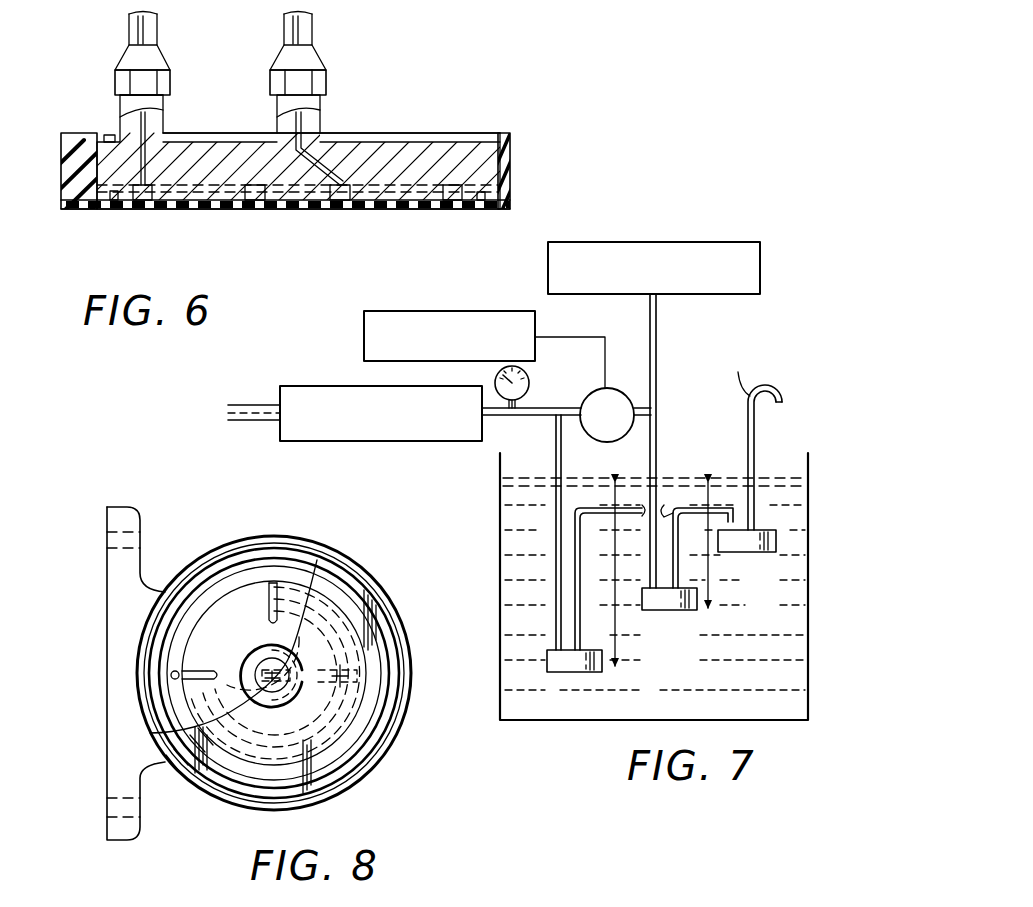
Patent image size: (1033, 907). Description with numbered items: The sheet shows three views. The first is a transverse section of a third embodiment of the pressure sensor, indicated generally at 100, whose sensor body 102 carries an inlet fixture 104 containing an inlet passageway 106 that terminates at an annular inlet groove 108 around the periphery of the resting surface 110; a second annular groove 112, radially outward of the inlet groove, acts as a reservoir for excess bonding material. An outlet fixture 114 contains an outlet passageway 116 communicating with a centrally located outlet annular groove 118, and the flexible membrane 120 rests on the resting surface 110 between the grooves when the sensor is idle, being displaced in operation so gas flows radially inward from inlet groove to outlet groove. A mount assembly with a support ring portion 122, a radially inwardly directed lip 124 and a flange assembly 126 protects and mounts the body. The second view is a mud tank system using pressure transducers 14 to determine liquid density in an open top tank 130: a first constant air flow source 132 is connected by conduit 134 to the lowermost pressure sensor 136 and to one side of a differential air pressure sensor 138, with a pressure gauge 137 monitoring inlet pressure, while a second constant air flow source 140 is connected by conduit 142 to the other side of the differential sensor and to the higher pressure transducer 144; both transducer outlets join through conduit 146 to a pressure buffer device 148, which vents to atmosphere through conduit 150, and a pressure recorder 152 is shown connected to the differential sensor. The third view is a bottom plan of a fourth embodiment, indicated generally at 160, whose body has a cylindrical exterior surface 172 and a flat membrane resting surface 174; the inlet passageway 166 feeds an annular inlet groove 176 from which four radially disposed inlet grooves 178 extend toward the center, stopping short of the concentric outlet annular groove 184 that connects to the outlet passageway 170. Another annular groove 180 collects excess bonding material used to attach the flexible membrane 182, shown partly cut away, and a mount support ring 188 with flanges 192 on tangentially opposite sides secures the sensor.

In FIG. 6, the probe assembly 100 is at (96, 85).
In FIG. 6, the sensor body 102 is at (420, 153).
In FIG. 6, the inlet fixture 104 is at (163, 103).
In FIG. 6, the inlet passageway 106 is at (145, 165).
In FIG. 6, the annular inlet groove 108 is at (141, 205).
In FIG. 6, the resting surface 110 is at (215, 208).
In FIG. 6, the second annular groove 112 is at (115, 208).
In FIG. 6, the outlet fixture 114 is at (322, 112).
In FIG. 6, the outlet passageway 116 is at (318, 165).
In FIG. 6, the outlet annular groove 118 is at (332, 207).
In FIG. 6, the flexible membrane 120 is at (428, 208).
In FIG. 6, the support ring portion 122 is at (507, 175).
In FIG. 6, the radially inwardly directed lip 124 is at (480, 133).
In FIG. 6, the flange assembly 126 is at (61, 156).
In FIG. 7, the open top tank 130 is at (500, 628).
In FIG. 7, the first constant air flow source 132 is at (280, 390).
In FIG. 7, the conduit 134 is at (557, 518).
In FIG. 7, the lowermost pressure sensor 136 is at (563, 665).
In FIG. 7, the pressure gauge 137 is at (497, 378).
In FIG. 7, the differential air pressure sensor 138 is at (590, 400).
In FIG. 7, the second constant air flow source 140 is at (730, 242).
In FIG. 7, the conduit 142 is at (660, 385).
In FIG. 7, the next higher elevation pressure transducer 144 is at (657, 603).
In FIG. 7, the conduit 146 is at (573, 558).
In FIG. 7, the pressure buffer device 148 is at (752, 541).
In FIG. 7, the conduit 150 is at (757, 462).
In FIG. 7, the pressure recorder 152 is at (364, 331).
In FIG. 7, the pressure transducers 14 is at (543, 660).
In FIG. 8, the housing 160 is at (356, 548).
In FIG. 8, the inlet passageway 166 is at (172, 674).
In FIG. 8, the outlet passageway 170 is at (298, 700).
In FIG. 8, the cylindrical exterior surface 172 is at (283, 540).
In FIG. 8, the membrane resting surface 174 is at (237, 612).
In FIG. 8, the annular inlet groove 176 is at (183, 626).
In FIG. 8, the radially disposed inlet grooves 178 is at (277, 607).
In FIG. 8, the annular groove 180 is at (357, 777).
In FIG. 8, the flexible membrane 182 is at (330, 714).
In FIG. 8, the outlet annular groove 184 is at (243, 665).
In FIG. 8, the support ring portion 188 is at (235, 812).
In FIG. 8, the flanges 192 is at (130, 523).